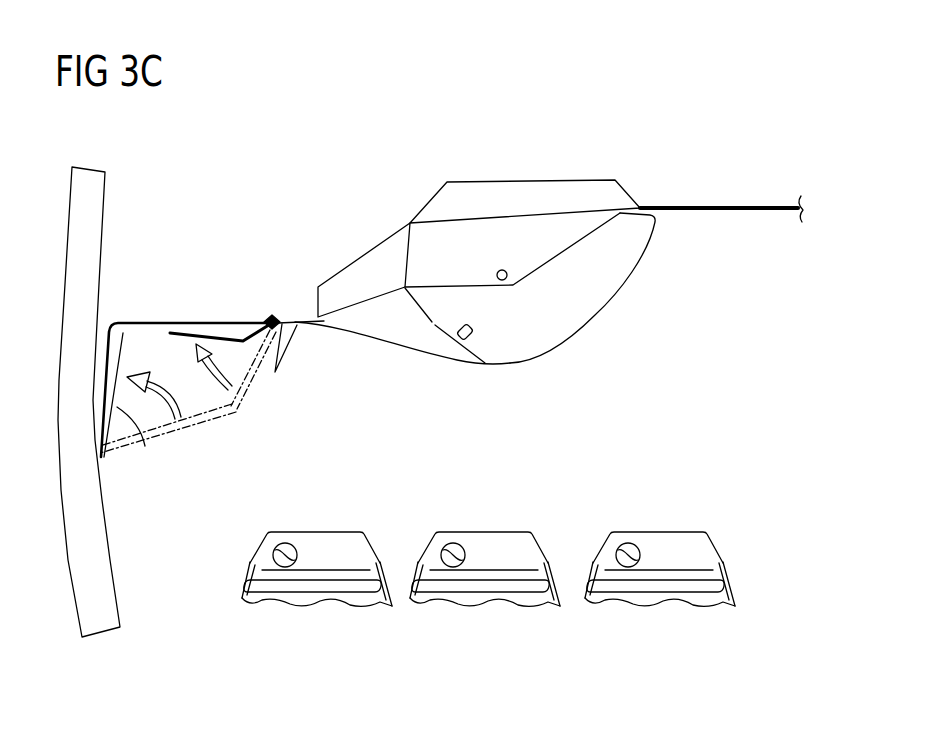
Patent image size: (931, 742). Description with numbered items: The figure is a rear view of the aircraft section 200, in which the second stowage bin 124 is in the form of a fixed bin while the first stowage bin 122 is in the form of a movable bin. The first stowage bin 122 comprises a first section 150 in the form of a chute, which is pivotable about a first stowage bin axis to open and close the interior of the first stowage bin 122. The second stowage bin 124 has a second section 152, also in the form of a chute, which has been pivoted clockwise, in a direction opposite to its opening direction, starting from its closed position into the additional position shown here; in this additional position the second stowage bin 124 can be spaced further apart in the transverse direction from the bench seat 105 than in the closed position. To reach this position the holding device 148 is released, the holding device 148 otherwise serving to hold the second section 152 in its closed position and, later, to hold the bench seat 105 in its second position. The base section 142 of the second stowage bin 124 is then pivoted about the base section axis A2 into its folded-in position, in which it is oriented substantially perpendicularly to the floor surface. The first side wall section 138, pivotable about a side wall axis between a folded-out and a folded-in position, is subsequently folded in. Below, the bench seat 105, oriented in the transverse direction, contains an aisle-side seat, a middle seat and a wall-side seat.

The aircraft section 200 is at (410, 149).
The first stowage bin 122 is at (537, 182).
The second stowage bin 124 is at (150, 338).
The second section 152 is at (200, 343).
The holding device 148 is at (300, 330).
The first side wall section 138 is at (216, 397).
The base section 142 is at (149, 447).
The base section axis A2 is at (114, 455).
The first section 150 is at (592, 318).
The bench seat 105 is at (596, 479).